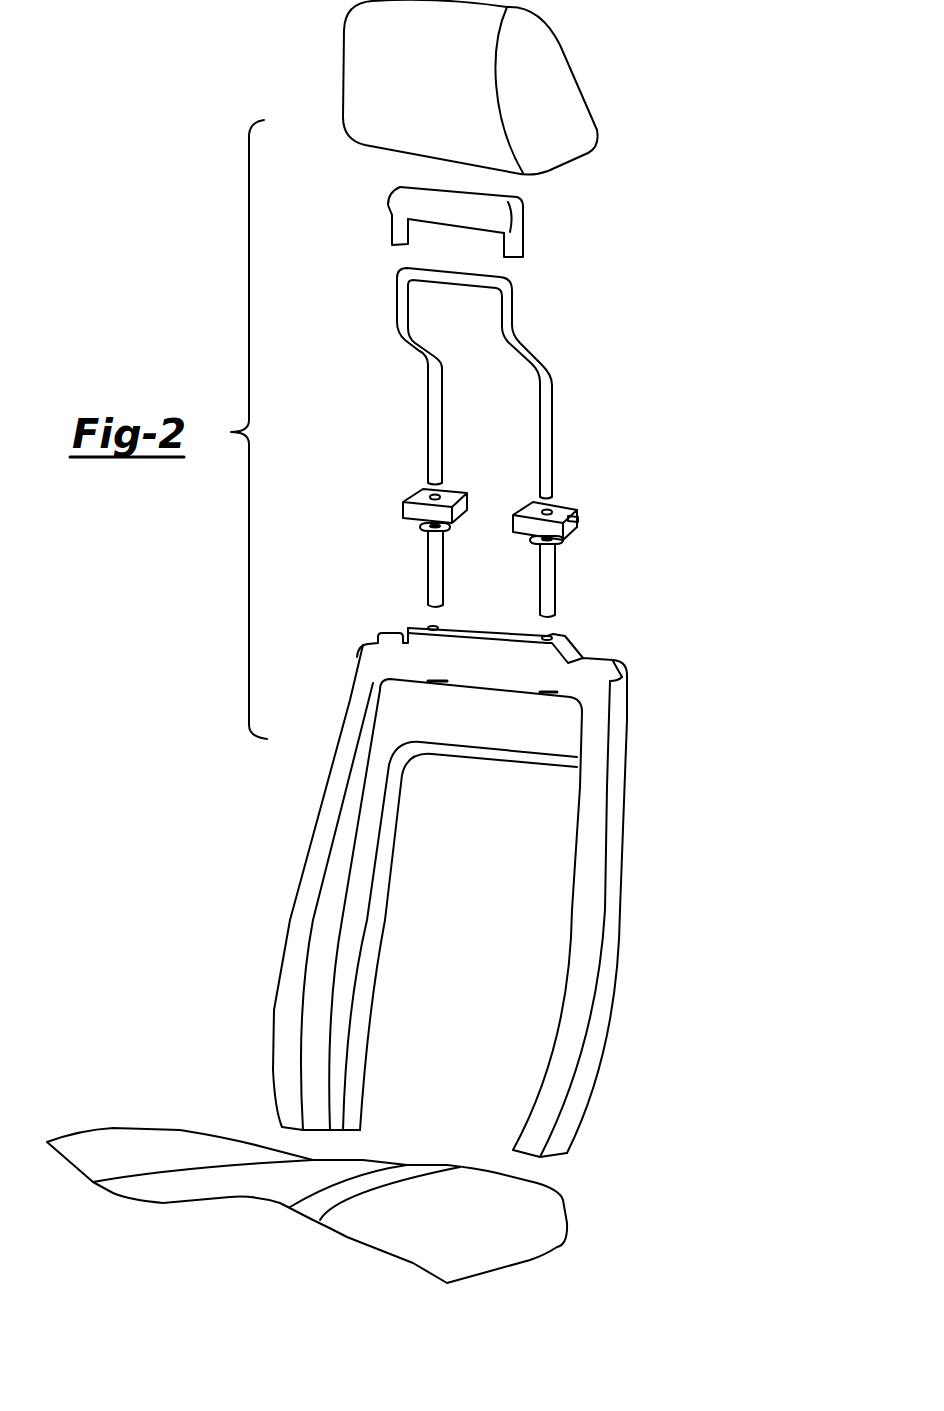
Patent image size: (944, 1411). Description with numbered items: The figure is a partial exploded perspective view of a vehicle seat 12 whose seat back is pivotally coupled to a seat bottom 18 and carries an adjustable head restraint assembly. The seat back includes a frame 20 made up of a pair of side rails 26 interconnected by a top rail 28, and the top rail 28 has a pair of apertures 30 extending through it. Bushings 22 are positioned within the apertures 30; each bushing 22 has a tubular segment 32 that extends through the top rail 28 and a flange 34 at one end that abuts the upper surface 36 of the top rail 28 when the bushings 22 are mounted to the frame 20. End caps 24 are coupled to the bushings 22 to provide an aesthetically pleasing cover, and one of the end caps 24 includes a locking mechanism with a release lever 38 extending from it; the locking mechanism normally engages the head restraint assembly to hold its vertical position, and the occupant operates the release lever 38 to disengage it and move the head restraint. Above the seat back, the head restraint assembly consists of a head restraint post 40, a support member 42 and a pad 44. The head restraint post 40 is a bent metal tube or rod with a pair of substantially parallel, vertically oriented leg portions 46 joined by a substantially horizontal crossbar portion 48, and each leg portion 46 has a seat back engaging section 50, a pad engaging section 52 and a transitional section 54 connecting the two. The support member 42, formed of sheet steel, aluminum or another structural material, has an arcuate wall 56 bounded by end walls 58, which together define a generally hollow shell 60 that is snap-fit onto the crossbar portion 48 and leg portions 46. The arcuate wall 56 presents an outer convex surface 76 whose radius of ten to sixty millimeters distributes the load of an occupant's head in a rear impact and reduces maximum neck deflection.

The seat 12 is at (188, 835).
The seat bottom 18 is at (143, 1143).
The frame 20 is at (624, 914).
The bushings 22 is at (563, 593).
The end caps 24 is at (567, 503).
The side rails 26 is at (587, 842).
The top rail 28 is at (533, 670).
The apertures 30 is at (545, 636).
The tubular segment 32 is at (428, 557).
The flange 34 is at (417, 522).
The upper surface 36 is at (460, 627).
The release lever 38 is at (578, 520).
The head restraint post 40 is at (528, 306).
The support member 42 is at (540, 227).
The pad 44 is at (600, 88).
The leg portions 46 is at (420, 367).
The crossbar portion 48 is at (447, 288).
The seat back engaging section 50 is at (548, 453).
The pad engaging section 52 is at (510, 318).
The transitional section 54 is at (530, 358).
The arcuate wall 56 is at (427, 200).
The end walls 58 is at (518, 214).
The hollow shell 60 is at (452, 232).
The outer convex surface 76 is at (487, 208).